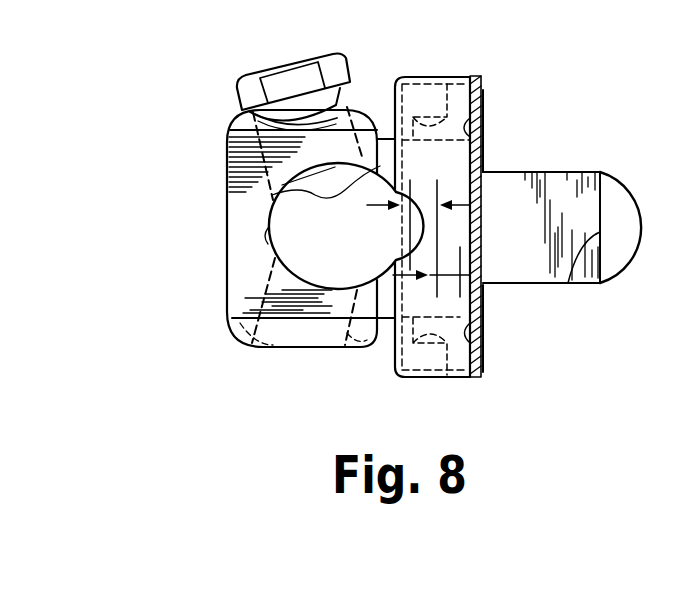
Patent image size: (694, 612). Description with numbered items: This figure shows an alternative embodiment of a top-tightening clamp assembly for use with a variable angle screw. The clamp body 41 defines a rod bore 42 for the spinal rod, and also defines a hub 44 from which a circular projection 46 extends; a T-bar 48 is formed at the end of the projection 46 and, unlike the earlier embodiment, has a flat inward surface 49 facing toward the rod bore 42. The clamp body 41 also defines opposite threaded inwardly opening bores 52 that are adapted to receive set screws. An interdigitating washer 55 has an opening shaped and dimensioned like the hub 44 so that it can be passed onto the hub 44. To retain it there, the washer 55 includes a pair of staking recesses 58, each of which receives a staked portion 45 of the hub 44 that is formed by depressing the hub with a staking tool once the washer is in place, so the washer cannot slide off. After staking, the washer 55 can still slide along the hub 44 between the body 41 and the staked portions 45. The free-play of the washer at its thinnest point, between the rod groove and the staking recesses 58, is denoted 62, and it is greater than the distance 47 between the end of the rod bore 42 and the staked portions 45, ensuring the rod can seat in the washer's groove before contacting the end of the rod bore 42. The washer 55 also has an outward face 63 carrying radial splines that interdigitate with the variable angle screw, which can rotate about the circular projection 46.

The clamp body 41 is at (228, 320).
The rod bore 42 is at (267, 236).
The hub 44 is at (392, 328).
The staked portion 45 is at (482, 118).
The circular projection 46 is at (567, 172).
The distance between end of rod bore and staked portions 47 is at (512, 285).
The T-bar 48 is at (635, 198).
The flat inward surface 49 is at (568, 285).
The threaded inwardly opening bore 52 is at (225, 145).
The interdigitating washer 55 is at (496, 76).
The staking recess 58 is at (452, 76).
The free-play of the washer 62 is at (508, 172).
The outward face 63 is at (483, 365).